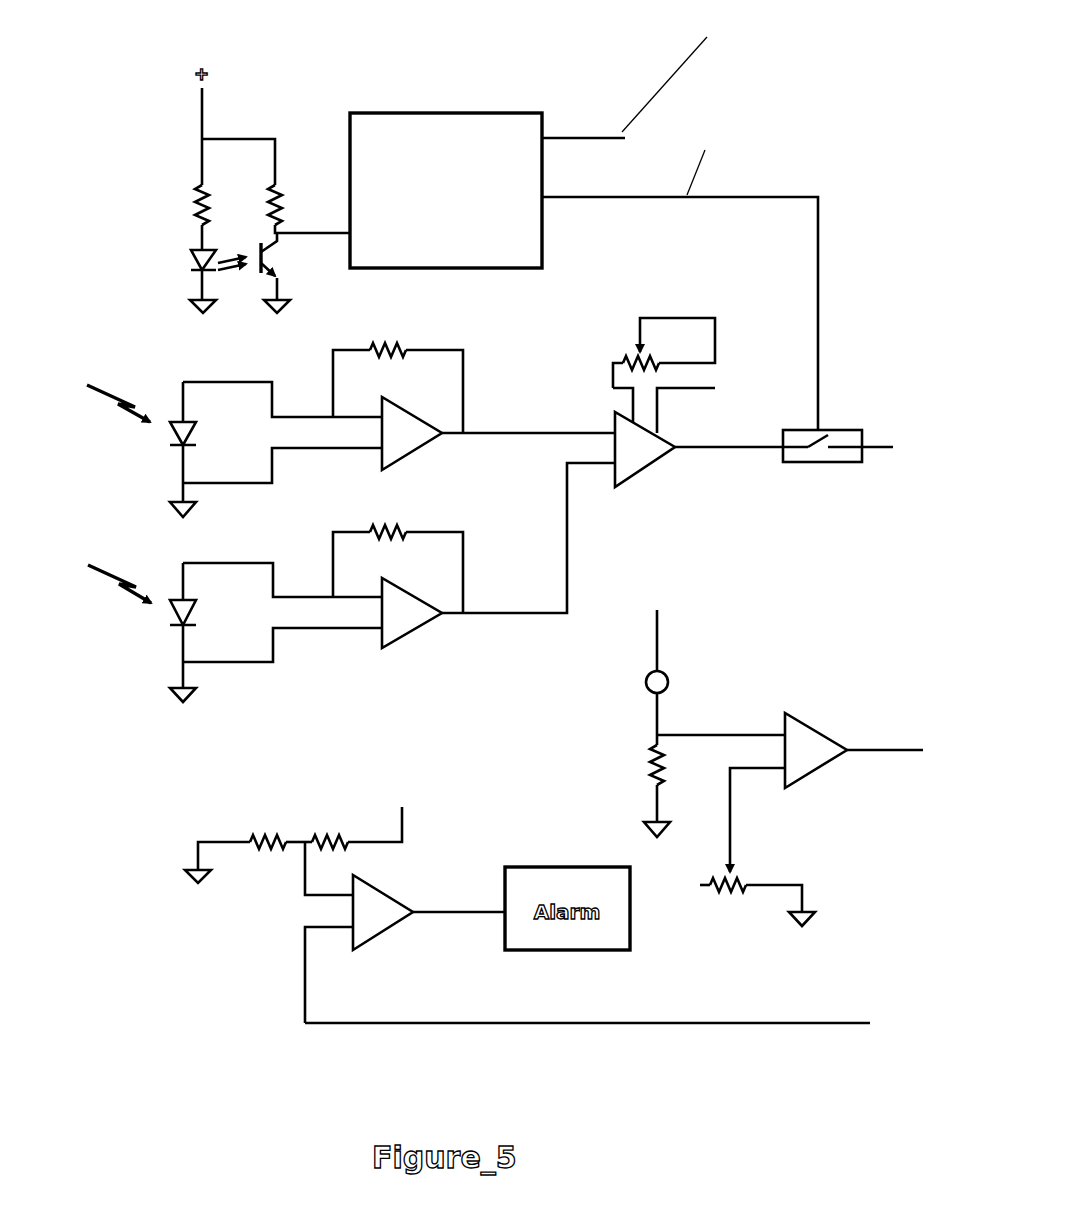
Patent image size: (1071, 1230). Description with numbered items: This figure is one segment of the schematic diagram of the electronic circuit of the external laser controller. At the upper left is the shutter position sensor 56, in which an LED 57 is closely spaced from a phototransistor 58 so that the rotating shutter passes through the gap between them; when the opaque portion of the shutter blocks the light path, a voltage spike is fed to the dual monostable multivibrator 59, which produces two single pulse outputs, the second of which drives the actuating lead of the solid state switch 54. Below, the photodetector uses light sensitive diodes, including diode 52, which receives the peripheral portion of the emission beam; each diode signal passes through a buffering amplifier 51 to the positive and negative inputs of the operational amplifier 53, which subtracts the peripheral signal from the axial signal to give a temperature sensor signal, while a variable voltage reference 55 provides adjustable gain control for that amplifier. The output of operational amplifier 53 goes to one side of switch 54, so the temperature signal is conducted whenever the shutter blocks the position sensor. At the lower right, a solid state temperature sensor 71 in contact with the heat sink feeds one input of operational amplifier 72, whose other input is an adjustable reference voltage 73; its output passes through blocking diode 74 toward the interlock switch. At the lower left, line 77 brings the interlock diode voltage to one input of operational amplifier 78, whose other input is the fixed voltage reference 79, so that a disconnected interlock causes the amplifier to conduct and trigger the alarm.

The buffering amplifier 51 is at (180, 420).
The light sensitive diode 52 is at (420, 415).
The operational amplifier 53 is at (655, 462).
The solid state switch 54 is at (840, 463).
The variable voltage reference 55 is at (637, 332).
The position sensor 56 is at (180, 202).
The LED 57 is at (198, 251).
The phototransistor 58 is at (268, 257).
The dual monostable multivibrator 59 is at (545, 120).
The solid state temperature sensor 71 is at (668, 677).
The operational amplifier 72 is at (813, 727).
The adjustable reference voltage 73 is at (737, 865).
The blocking diode 74 is at (885, 754).
The line 77 is at (452, 1023).
The operational amplifier 78 is at (348, 905).
The fixed voltage reference 79 is at (300, 830).